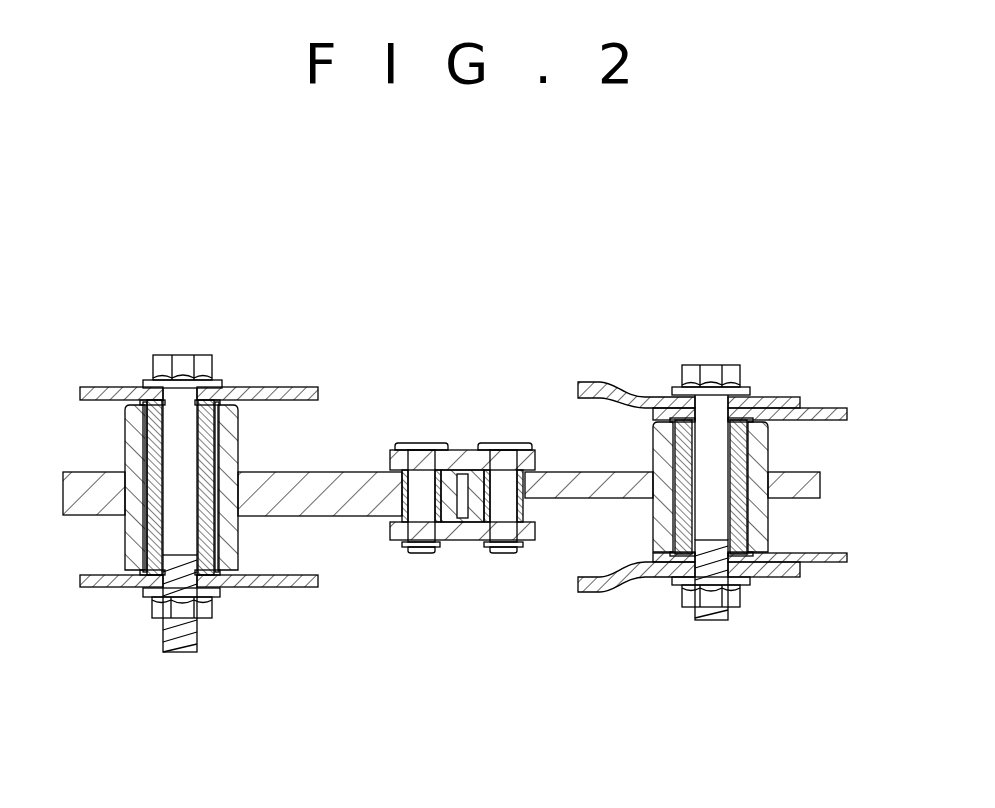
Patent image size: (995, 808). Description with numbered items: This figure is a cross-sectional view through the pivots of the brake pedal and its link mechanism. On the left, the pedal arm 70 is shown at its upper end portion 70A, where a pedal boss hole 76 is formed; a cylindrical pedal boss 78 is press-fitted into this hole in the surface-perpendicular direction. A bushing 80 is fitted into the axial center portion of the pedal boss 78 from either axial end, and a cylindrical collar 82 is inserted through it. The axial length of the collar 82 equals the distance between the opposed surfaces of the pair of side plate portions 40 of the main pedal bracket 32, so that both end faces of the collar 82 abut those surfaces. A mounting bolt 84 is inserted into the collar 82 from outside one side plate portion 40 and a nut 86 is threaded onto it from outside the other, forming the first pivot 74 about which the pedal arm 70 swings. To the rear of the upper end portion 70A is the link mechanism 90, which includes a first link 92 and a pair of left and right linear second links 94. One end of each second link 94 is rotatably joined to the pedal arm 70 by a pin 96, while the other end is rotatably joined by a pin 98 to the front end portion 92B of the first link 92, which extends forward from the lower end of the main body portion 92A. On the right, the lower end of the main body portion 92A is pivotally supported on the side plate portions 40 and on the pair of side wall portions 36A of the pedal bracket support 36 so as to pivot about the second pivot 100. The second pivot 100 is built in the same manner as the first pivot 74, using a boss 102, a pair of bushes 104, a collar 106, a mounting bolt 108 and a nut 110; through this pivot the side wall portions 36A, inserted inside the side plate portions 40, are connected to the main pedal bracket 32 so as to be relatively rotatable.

The first pivot 74 is at (186, 353).
The bushing 80 is at (214, 401).
The side plate portions 40 is at (240, 476).
The main pedal bracket 32 is at (312, 386).
The pedal boss hole 76 is at (138, 488).
The collar 82 is at (217, 447).
The pedal arm 70 is at (215, 501).
The upper end portion 70A is at (66, 499).
The nut 86 is at (155, 604).
The mounting bolt 84 is at (170, 652).
The pedal boss 78 is at (240, 578).
The link mechanism 90 is at (481, 516).
The second links 94 is at (463, 451).
The pin 96 is at (400, 444).
The pin 98 is at (507, 444).
The front end portion 92B is at (473, 523).
The first link 92 is at (702, 482).
The main body portion 92A is at (821, 488).
The second pivot 100 is at (706, 363).
The bushes 104 is at (663, 398).
The collar 106 is at (742, 413).
The pedal bracket support 36 is at (729, 480).
The side wall portions 36A is at (846, 420).
The boss 102 is at (653, 542).
The nut 110 is at (742, 601).
The mounting bolt 108 is at (710, 622).